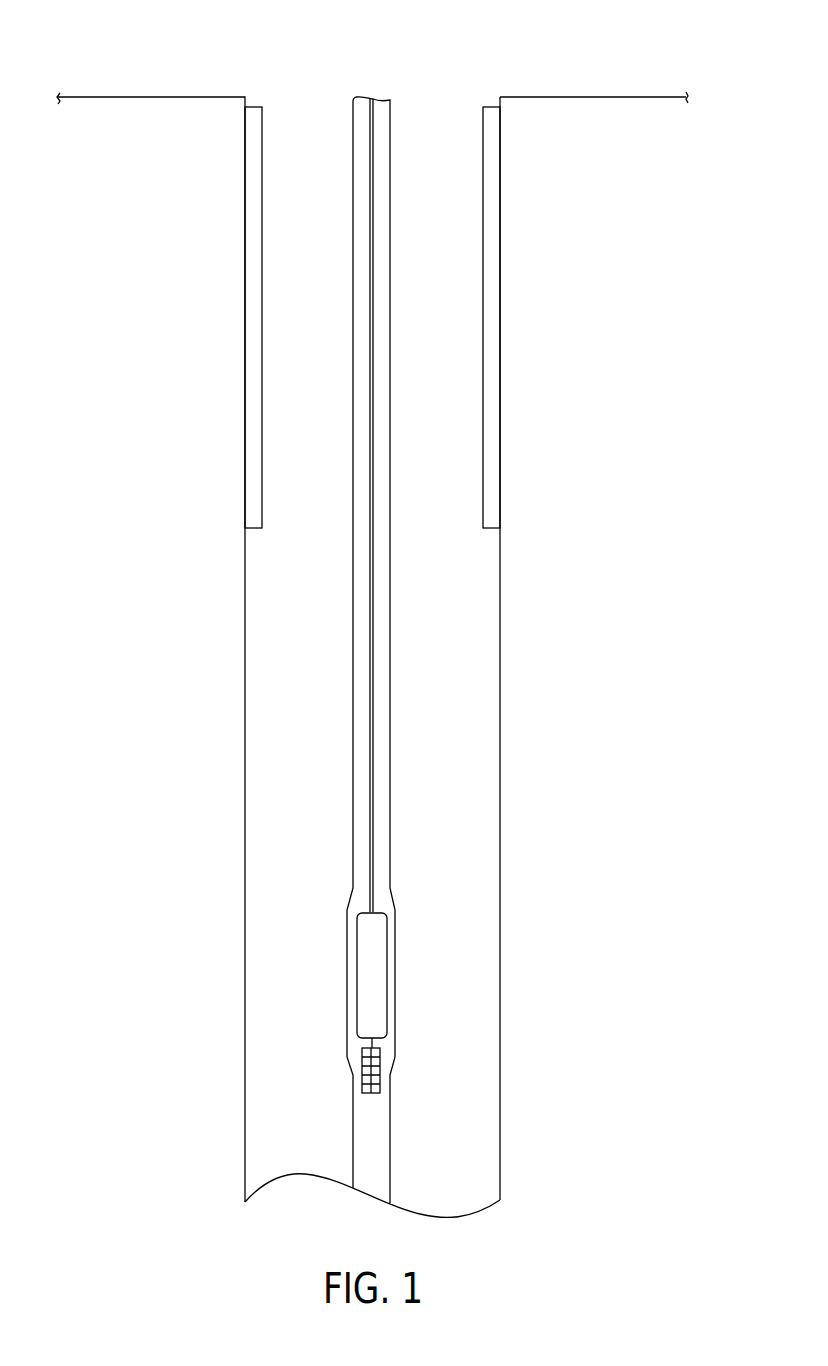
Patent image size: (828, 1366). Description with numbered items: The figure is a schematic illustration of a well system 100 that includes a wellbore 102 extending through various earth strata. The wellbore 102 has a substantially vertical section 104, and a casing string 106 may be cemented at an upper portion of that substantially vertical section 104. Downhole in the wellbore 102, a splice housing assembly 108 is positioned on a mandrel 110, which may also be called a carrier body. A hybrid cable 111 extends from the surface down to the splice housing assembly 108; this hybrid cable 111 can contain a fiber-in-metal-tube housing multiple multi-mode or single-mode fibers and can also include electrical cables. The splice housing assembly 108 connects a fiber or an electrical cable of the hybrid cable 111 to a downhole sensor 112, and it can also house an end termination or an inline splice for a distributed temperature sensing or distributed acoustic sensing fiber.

The well system 100 is at (512, 70).
The wellbore 102 is at (244, 197).
The substantially vertical section 104 is at (500, 833).
The casing string 106 is at (253, 360).
The splice housing assembly 108 is at (373, 985).
The mandrel 110 is at (380, 641).
The hybrid cable 111 is at (375, 578).
The downhole sensor 112 is at (379, 1067).